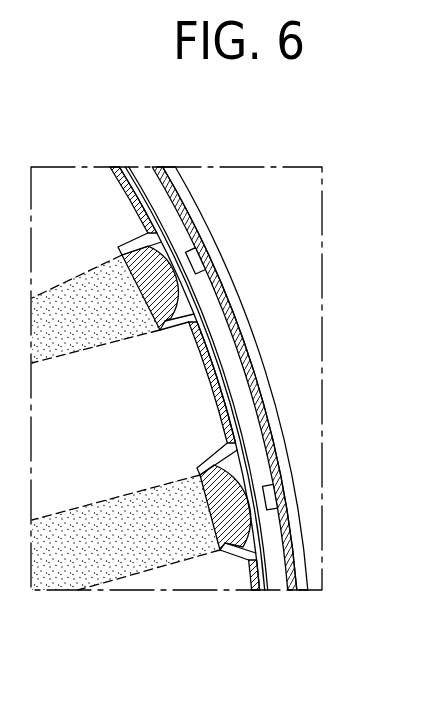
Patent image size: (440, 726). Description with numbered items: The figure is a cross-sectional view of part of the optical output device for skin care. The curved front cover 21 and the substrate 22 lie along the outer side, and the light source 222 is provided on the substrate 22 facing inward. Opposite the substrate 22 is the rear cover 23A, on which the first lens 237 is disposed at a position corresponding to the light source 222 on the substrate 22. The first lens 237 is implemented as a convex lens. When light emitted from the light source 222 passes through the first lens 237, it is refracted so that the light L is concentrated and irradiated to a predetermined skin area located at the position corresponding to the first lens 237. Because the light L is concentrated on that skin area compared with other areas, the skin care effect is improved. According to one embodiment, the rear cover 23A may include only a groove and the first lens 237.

The rear cover 23A is at (113, 167).
The first lens 237 is at (164, 238).
The light source 222 is at (190, 250).
The front cover 21 is at (254, 340).
The substrate 22 is at (264, 413).
The light L is at (126, 422).